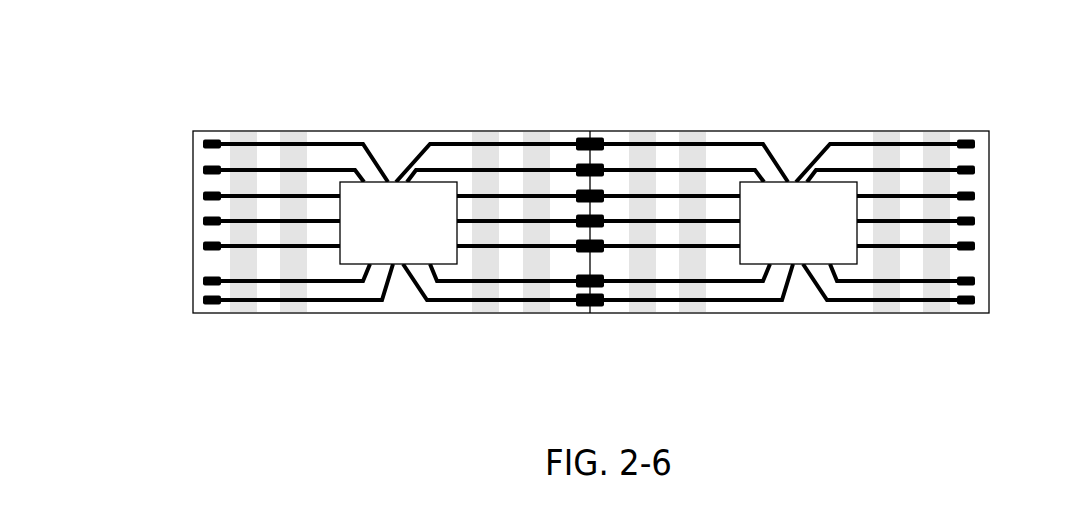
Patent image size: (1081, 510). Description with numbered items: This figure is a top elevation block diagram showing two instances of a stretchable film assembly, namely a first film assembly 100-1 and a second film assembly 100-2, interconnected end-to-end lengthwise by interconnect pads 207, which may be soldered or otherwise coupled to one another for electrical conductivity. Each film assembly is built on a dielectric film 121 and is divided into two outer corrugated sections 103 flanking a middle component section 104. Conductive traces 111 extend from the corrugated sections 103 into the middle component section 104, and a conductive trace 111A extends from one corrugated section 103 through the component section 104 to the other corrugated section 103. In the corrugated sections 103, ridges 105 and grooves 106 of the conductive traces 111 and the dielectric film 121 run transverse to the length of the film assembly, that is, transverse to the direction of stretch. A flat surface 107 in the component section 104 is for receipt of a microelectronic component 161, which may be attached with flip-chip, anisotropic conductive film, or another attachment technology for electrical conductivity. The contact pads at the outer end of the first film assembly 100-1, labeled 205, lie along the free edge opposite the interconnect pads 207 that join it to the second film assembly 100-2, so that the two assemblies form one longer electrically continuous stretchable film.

The film assembly 100-1 is at (590, 63).
The film assembly 100-2 is at (988, 63).
The corrugated section 103 is at (317, 118).
The middle component section 104 is at (465, 118).
The ridges 105 is at (273, 306).
The grooves 106 is at (243, 306).
The flat surface 107 is at (406, 306).
The conductive traces 111 is at (228, 305).
The conductive trace 111A is at (975, 142).
The dielectric film 121 is at (989, 198).
The microelectronic component 161 is at (598, 223).
The edge connector row 205 is at (203, 221).
The interconnect pads 207 is at (575, 313).